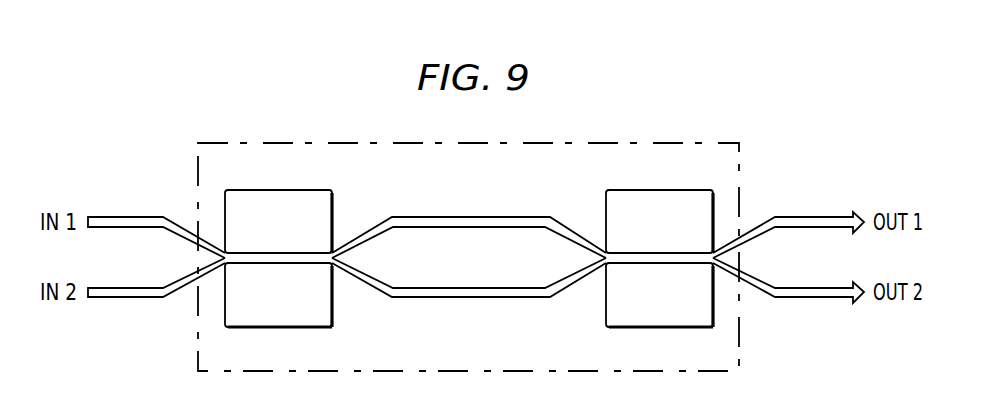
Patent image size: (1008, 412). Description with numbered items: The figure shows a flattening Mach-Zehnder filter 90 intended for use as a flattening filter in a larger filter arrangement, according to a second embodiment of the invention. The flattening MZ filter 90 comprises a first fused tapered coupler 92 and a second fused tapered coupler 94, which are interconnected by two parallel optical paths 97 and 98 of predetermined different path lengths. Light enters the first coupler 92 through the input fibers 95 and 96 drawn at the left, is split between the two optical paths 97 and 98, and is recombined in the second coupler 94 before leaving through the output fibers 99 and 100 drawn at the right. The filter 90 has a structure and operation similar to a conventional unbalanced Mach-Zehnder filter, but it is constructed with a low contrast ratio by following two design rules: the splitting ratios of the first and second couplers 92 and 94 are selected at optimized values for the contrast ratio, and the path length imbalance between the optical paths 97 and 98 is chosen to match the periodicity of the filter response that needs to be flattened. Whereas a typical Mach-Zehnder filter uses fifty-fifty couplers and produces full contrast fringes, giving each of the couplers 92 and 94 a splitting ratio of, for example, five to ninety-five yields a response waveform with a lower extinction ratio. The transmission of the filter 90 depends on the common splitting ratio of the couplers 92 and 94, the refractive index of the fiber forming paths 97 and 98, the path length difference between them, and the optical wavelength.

The flattening Mach-Zehnder filter 90 is at (368, 143).
The first fused tapered coupler 92 is at (268, 189).
The second fused tapered coupler 94 is at (645, 189).
The first input optical fiber (IN 1) 95 is at (110, 217).
The second input optical fiber (IN 2) 96 is at (110, 297).
The first optical path 97 is at (430, 217).
The second optical path 98 is at (430, 297).
The first output optical fiber (OUT 1) 99 is at (812, 217).
The second output optical fiber (OUT 2) 100 is at (812, 297).